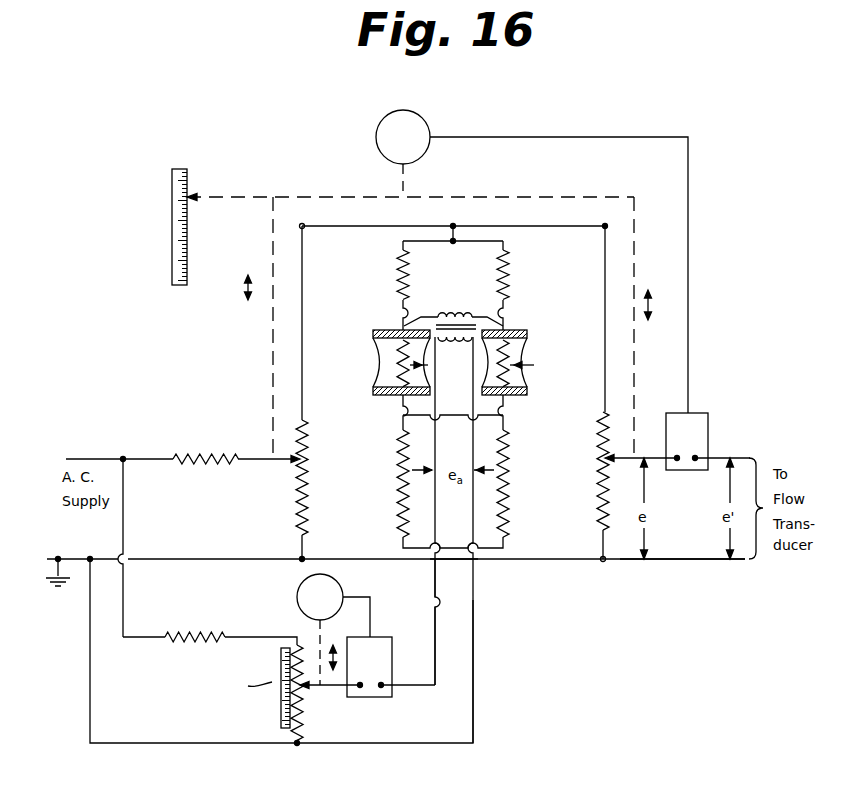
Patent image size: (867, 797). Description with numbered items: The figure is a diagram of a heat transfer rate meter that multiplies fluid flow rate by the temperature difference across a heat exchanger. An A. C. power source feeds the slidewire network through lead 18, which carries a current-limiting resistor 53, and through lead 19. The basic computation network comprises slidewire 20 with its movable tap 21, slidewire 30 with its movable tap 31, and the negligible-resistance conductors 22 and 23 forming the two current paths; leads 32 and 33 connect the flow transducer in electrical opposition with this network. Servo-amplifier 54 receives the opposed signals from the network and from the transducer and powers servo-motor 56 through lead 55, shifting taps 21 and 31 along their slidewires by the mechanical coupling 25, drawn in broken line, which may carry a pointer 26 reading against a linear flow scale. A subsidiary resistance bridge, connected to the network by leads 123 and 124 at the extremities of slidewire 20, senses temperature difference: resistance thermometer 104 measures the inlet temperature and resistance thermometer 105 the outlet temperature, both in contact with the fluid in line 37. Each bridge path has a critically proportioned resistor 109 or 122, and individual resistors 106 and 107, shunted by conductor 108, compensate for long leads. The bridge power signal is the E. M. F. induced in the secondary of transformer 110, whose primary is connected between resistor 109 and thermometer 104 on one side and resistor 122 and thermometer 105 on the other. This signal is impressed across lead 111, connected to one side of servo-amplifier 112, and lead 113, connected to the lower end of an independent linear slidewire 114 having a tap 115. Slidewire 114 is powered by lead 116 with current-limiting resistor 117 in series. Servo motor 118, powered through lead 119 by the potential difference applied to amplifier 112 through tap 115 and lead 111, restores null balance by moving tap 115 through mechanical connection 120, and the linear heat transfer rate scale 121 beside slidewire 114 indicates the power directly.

The lead 18 is at (252, 462).
The lead 19 is at (206, 562).
The slidewire 20 is at (307, 485).
The movable tap 21 is at (286, 470).
The conductor 22 is at (312, 226).
The conductor 23 is at (514, 562).
The mechanical coupling 25 is at (460, 197).
The pointer 26 is at (192, 190).
The slidewire 30 is at (599, 456).
The movable tap 31 is at (614, 466).
The lead 32 is at (665, 559).
The lead 33 is at (630, 458).
The line 37 is at (379, 328).
The current-limiting resistor 53 is at (190, 455).
The servo-amplifier 54 is at (708, 434).
The lead 55 is at (688, 257).
The servo-motor 56 is at (426, 118).
The resistance thermometer 104 is at (395, 365).
The resistance thermometer 105 is at (520, 350).
The resistor 106 is at (398, 494).
The resistor 107 is at (507, 506).
The conductor 108 is at (452, 418).
The resistor 109 is at (395, 274).
The transformer 110 is at (455, 310).
The lead 111 is at (433, 599).
The servo-amplifier 112 is at (374, 698).
The lead 113 is at (473, 655).
The linear slidewire 114 is at (303, 728).
The tap 115 is at (312, 687).
The lead 116 is at (124, 513).
The current-limiting resistor 117 is at (188, 636).
The servo motor 118 is at (338, 582).
The lead 119 is at (370, 612).
The mechanical connection 120 is at (314, 632).
The heat transfer rate scale 121 is at (285, 720).
The resistor 122 is at (510, 272).
The lead 123 is at (456, 234).
The lead 124 is at (448, 570).